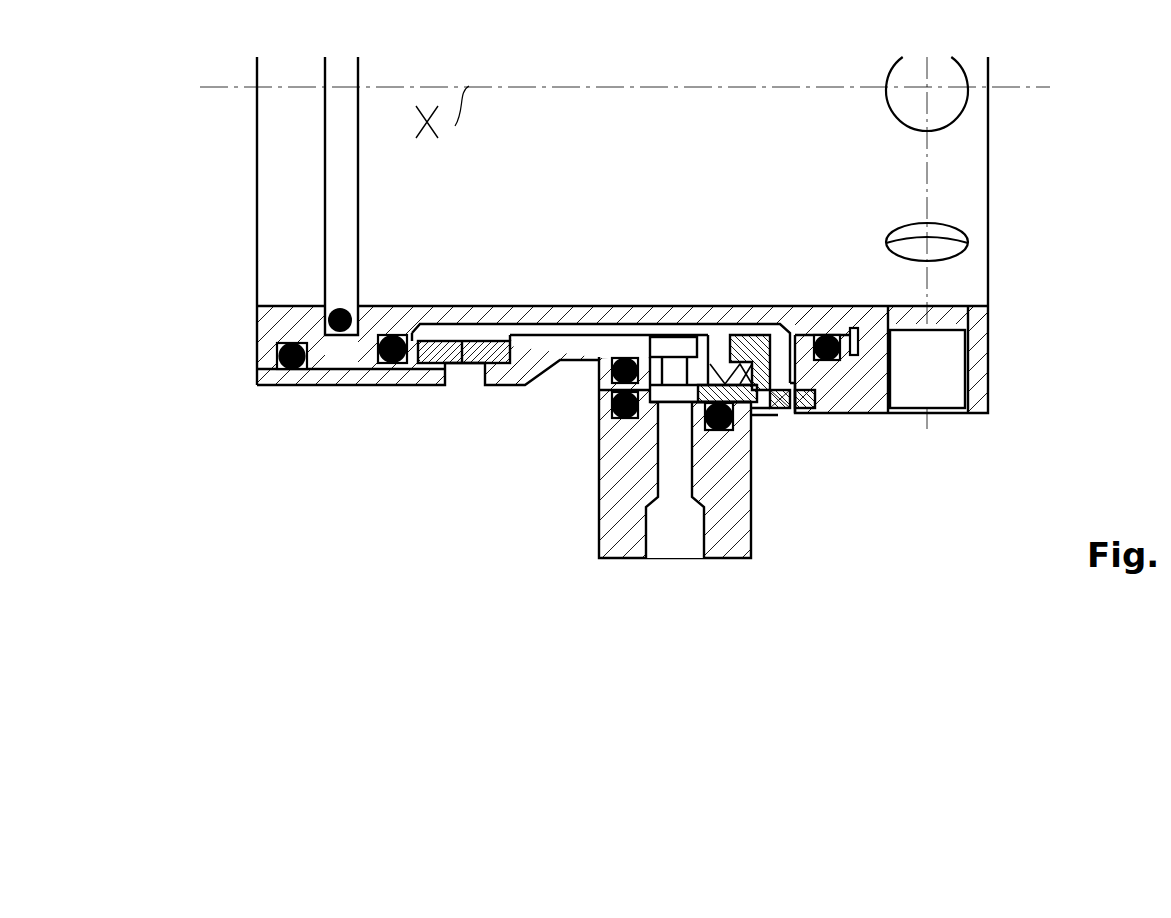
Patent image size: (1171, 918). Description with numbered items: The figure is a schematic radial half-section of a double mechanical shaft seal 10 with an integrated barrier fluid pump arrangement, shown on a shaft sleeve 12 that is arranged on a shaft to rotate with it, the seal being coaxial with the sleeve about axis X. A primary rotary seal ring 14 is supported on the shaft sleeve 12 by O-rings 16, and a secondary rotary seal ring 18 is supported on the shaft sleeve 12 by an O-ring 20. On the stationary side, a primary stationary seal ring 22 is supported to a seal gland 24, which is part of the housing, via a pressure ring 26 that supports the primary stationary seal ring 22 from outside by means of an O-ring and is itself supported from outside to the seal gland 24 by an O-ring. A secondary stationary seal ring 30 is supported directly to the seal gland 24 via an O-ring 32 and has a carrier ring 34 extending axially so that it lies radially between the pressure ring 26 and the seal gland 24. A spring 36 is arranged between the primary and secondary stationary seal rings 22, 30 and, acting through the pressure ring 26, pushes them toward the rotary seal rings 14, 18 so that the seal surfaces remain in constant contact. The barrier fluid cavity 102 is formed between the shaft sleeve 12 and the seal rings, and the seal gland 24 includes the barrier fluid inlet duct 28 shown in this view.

The double mechanical shaft seal 10 is at (425, 500).
The shaft sleeve 12 is at (303, 330).
The primary rotary seal ring 14 is at (293, 377).
The O-rings 16 is at (390, 365).
The barrier fluid cavity 102 is at (493, 331).
The primary stationary seal ring 22 is at (537, 372).
The seal gland 24 is at (612, 523).
The pressure ring 26 is at (600, 383).
The barrier fluid inlet duct 28 is at (660, 545).
The secondary stationary seal ring 30 is at (805, 405).
The O-ring 32 is at (740, 413).
The carrier ring 34 is at (738, 408).
The spring 36 is at (745, 412).
The secondary rotary seal ring 18 is at (851, 358).
The O-ring 20 is at (836, 362).